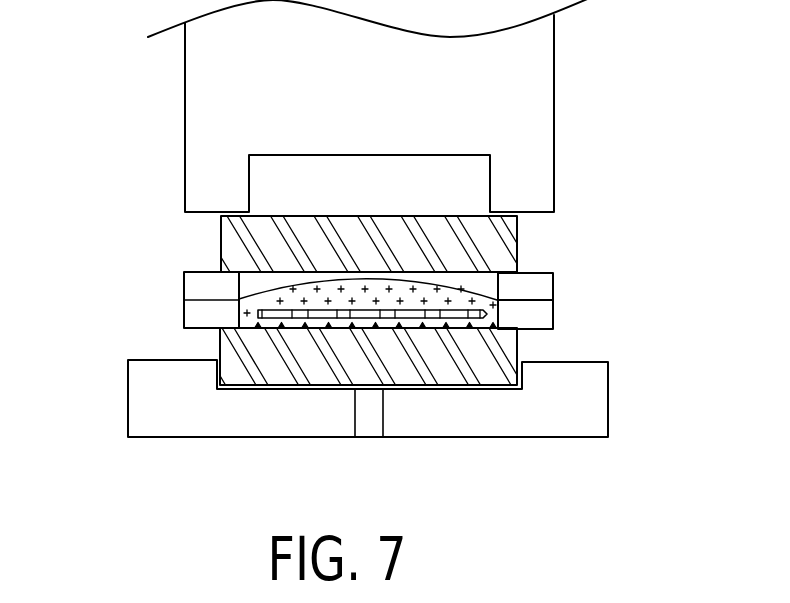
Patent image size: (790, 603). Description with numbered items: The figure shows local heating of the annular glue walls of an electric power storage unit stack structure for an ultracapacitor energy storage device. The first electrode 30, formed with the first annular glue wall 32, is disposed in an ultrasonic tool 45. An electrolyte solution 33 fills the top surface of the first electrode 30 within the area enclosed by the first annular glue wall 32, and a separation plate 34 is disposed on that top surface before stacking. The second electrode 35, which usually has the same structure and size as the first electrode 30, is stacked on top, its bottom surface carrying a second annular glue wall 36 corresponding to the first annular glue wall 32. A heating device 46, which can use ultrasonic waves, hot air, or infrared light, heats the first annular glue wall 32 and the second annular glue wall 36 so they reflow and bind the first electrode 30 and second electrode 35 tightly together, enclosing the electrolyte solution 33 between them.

The heating device 46 is at (528, 97).
The second electrode 35 is at (243, 245).
The electrolyte solution 33 is at (268, 303).
The first electrode 30 is at (240, 345).
The ultrasonic tool 45 is at (142, 400).
The separation plate 34 is at (455, 317).
The second annular glue wall 36 is at (542, 288).
The first annular glue wall 32 is at (542, 313).